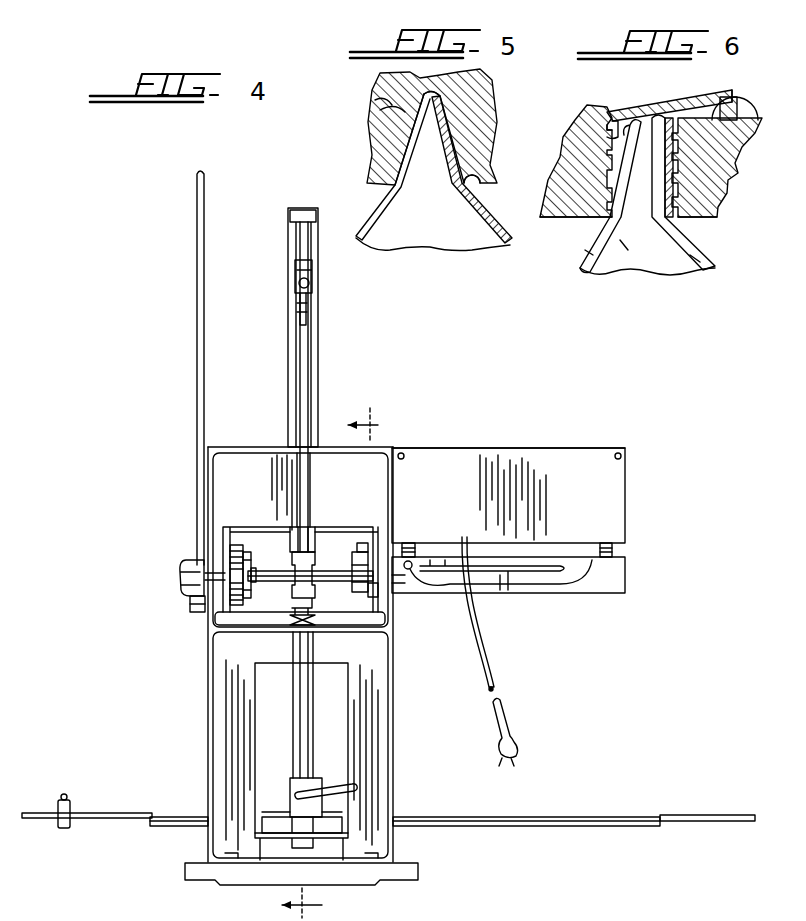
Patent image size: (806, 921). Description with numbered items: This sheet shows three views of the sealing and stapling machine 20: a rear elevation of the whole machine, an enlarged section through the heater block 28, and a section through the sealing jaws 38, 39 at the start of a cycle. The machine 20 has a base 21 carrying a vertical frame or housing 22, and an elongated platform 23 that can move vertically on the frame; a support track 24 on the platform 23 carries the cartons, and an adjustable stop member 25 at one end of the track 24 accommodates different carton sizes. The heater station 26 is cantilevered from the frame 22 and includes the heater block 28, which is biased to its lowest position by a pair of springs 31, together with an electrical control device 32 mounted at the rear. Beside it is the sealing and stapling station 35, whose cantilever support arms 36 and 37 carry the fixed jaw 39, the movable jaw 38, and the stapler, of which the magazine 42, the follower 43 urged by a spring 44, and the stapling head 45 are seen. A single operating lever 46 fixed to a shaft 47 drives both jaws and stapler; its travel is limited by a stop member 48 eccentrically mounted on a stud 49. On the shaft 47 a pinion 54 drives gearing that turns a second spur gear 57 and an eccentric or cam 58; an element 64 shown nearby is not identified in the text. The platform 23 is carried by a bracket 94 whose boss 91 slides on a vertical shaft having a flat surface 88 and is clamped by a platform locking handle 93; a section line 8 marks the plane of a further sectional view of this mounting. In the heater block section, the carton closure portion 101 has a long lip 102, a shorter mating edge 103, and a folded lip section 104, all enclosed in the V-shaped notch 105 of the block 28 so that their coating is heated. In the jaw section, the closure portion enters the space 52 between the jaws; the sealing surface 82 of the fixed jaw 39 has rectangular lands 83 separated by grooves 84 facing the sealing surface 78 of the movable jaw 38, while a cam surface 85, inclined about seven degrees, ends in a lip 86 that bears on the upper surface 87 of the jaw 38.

In FIG. 4, the section line 8 is at (338, 659).
In FIG. 4, the sealing and stapling machine 20 is at (240, 381).
In FIG. 4, the base 21 is at (420, 877).
In FIG. 4, the vertical frame or housing 22 is at (378, 739).
In FIG. 4, the elongated platform 23 is at (601, 827).
In FIG. 4, the support track 24 is at (688, 815).
In FIG. 4, the stop member 25 is at (68, 808).
In FIG. 4, the heater station 26 is at (636, 491).
In FIG. 4, the heater block 28 is at (615, 579).
In FIG. 5, the heater block 28 is at (496, 134).
In FIG. 4, the springs 31 is at (410, 543).
In FIG. 4, the electrical control device 32 is at (615, 509).
In FIG. 4, the sealing and stapling station 35 is at (328, 430).
In FIG. 4, the cantilever support arm 36 is at (237, 544).
In FIG. 4, the cantilever support arm 37 is at (371, 540).
In FIG. 6, the movable sealing jaw 38 is at (712, 205).
In FIG. 6, the fixed sealing jaw 39 is at (556, 216).
In FIG. 4, the magazine 42 is at (317, 368).
In FIG. 4, the follower 43 is at (311, 289).
In FIG. 4, the spring 44 is at (302, 348).
In FIG. 4, the stapling head 45 is at (307, 536).
In FIG. 4, the operating lever 46 is at (197, 306).
In FIG. 4, the shaft 47 is at (334, 582).
In FIG. 4, the stop member 48 is at (198, 614).
In FIG. 4, the stud 49 is at (184, 599).
In FIG. 6, the space between the sealing jaws 52 is at (633, 132).
In FIG. 4, the pinion or drive gear 54 is at (249, 548).
In FIG. 4, the second spur gear 57 is at (380, 597).
In FIG. 4, the eccentric or cam 58 is at (308, 560).
In FIG. 4, the gear 64 is at (360, 550).
In FIG. 6, the sealing surface of the movable jaw 78 is at (700, 148).
In FIG. 6, the sealing surface of the fixed jaw 82 is at (616, 128).
In FIG. 6, the longitudinal lands 83 is at (606, 130).
In FIG. 6, the grooves 84 is at (600, 152).
In FIG. 6, the cam surface 85 is at (693, 99).
In FIG. 6, the bearing member or lip 86 is at (745, 108).
In FIG. 6, the upper surface of the movable jaw 87 is at (720, 97).
In FIG. 4, the flat surface 88 is at (305, 656).
In FIG. 4, the boss 91 is at (292, 779).
In FIG. 4, the platform locking handle 93 is at (330, 787).
In FIG. 4, the bracket 94 is at (330, 840).
In FIG. 5, the closure portion of the carton 101 is at (368, 222).
In FIG. 6, the closure portion of the carton 101 is at (628, 249).
In FIG. 5, the lip or end portion 102 is at (387, 100).
In FIG. 6, the lip or end portion 102 is at (585, 252).
In FIG. 5, the mating lip or edge portion 103 is at (454, 186).
In FIG. 6, the mating lip or edge portion 103 is at (675, 254).
In FIG. 5, the lip section 104 is at (474, 186).
In FIG. 6, the lip section 104 is at (688, 226).
In FIG. 5, the V-shaped notch 105 is at (440, 95).